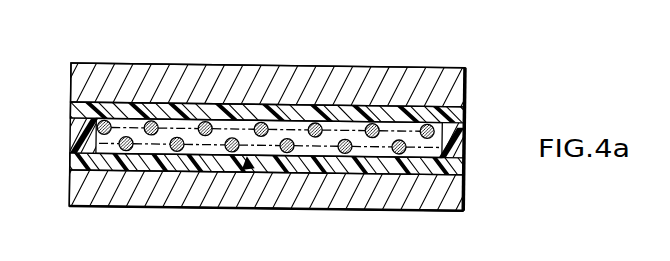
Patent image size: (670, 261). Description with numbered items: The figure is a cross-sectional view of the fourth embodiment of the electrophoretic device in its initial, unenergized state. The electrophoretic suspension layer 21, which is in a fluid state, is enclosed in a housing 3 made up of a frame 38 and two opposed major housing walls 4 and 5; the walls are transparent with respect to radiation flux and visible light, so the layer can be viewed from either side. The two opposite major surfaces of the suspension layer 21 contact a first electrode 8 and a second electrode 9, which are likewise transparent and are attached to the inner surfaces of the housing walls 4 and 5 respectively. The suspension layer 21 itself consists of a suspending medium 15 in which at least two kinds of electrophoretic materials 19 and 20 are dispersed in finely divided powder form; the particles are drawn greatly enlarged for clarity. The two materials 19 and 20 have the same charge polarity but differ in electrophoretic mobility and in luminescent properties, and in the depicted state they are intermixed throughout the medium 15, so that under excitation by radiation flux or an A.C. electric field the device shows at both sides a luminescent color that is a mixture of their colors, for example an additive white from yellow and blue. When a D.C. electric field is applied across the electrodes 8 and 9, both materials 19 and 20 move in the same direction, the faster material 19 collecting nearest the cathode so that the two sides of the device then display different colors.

The housing 3 is at (70, 60).
The major housing wall 4 is at (82, 78).
The first electrode 8 is at (72, 108).
The frame 38 is at (77, 130).
The second electrode 9 is at (72, 160).
The major housing wall 5 is at (78, 190).
The electrophoretic material 19 is at (126, 152).
The electrophoretic material 20 is at (176, 152).
The suspending medium 15 is at (205, 150).
The electrophoretic suspension layer 21 is at (251, 162).